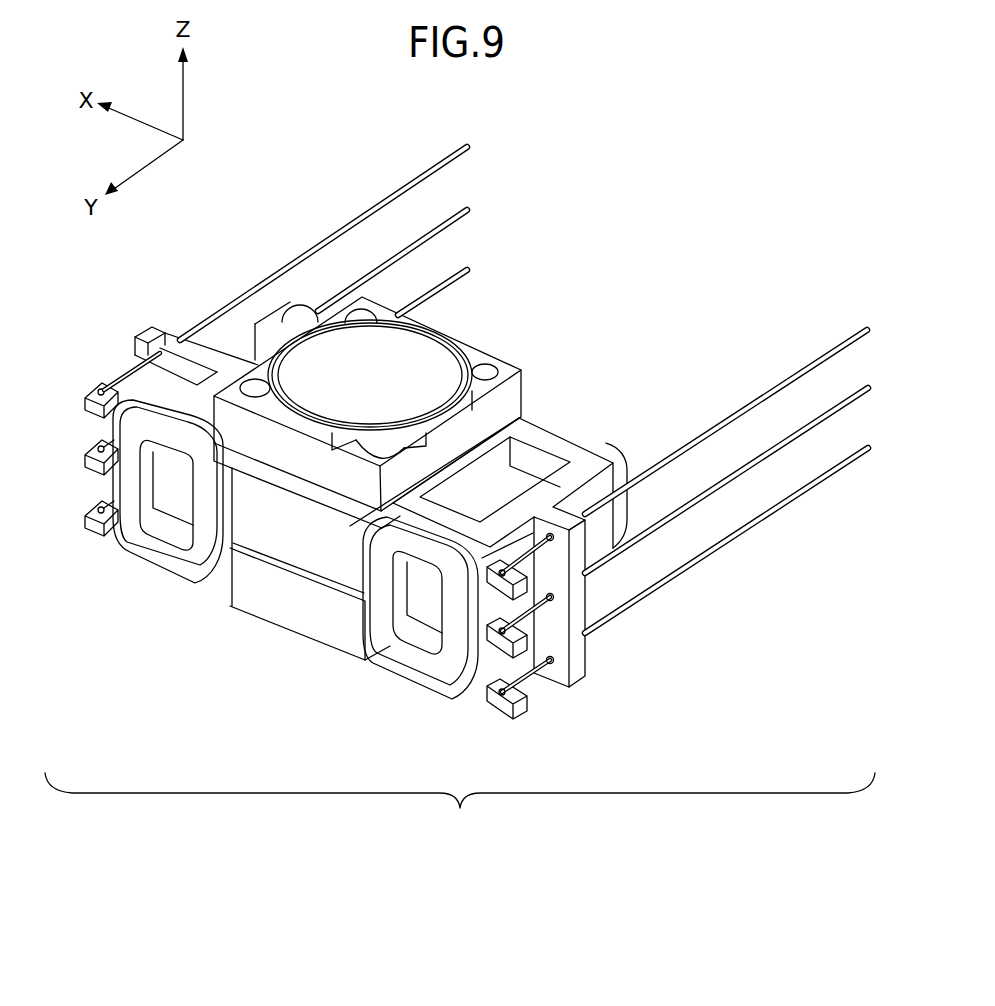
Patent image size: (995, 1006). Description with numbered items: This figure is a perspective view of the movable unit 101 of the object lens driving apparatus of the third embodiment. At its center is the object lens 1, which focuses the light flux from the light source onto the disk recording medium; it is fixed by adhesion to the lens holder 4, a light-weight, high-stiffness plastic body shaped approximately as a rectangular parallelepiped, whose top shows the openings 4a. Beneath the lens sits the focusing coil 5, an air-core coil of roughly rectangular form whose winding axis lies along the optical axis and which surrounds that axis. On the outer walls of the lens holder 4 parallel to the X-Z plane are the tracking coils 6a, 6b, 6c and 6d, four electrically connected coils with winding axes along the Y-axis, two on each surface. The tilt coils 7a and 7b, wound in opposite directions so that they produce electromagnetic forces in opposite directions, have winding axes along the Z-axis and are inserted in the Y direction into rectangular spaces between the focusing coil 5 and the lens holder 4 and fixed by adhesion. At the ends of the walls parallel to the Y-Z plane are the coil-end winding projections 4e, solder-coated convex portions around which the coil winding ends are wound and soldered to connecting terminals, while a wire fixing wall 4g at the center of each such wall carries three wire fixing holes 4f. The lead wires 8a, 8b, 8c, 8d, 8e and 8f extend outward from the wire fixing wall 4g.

The object lens 1 is at (417, 360).
The lens holder 4 is at (215, 340).
The opening in frame 4a is at (237, 353).
The coil-end winding projections 4e is at (87, 520).
The wire fixing holes 4f is at (555, 545).
The wire fixing wall 4g is at (140, 333).
The focusing coil 5 is at (320, 540).
The tracking coil 6a is at (137, 538).
The tracking coil 6b is at (440, 677).
The tracking coil 6c is at (573, 433).
The tracking coil 6d is at (312, 305).
The tilt coil 7a is at (177, 527).
The tilt coil 7b is at (427, 637).
The lead wire 8a is at (472, 151).
The lead wire 8b is at (472, 213).
The lead wire 8c is at (472, 273).
The lead wire 8d is at (787, 378).
The lead wire 8e is at (790, 433).
The lead wire 8f is at (758, 524).
The movable unit 101 is at (478, 846).